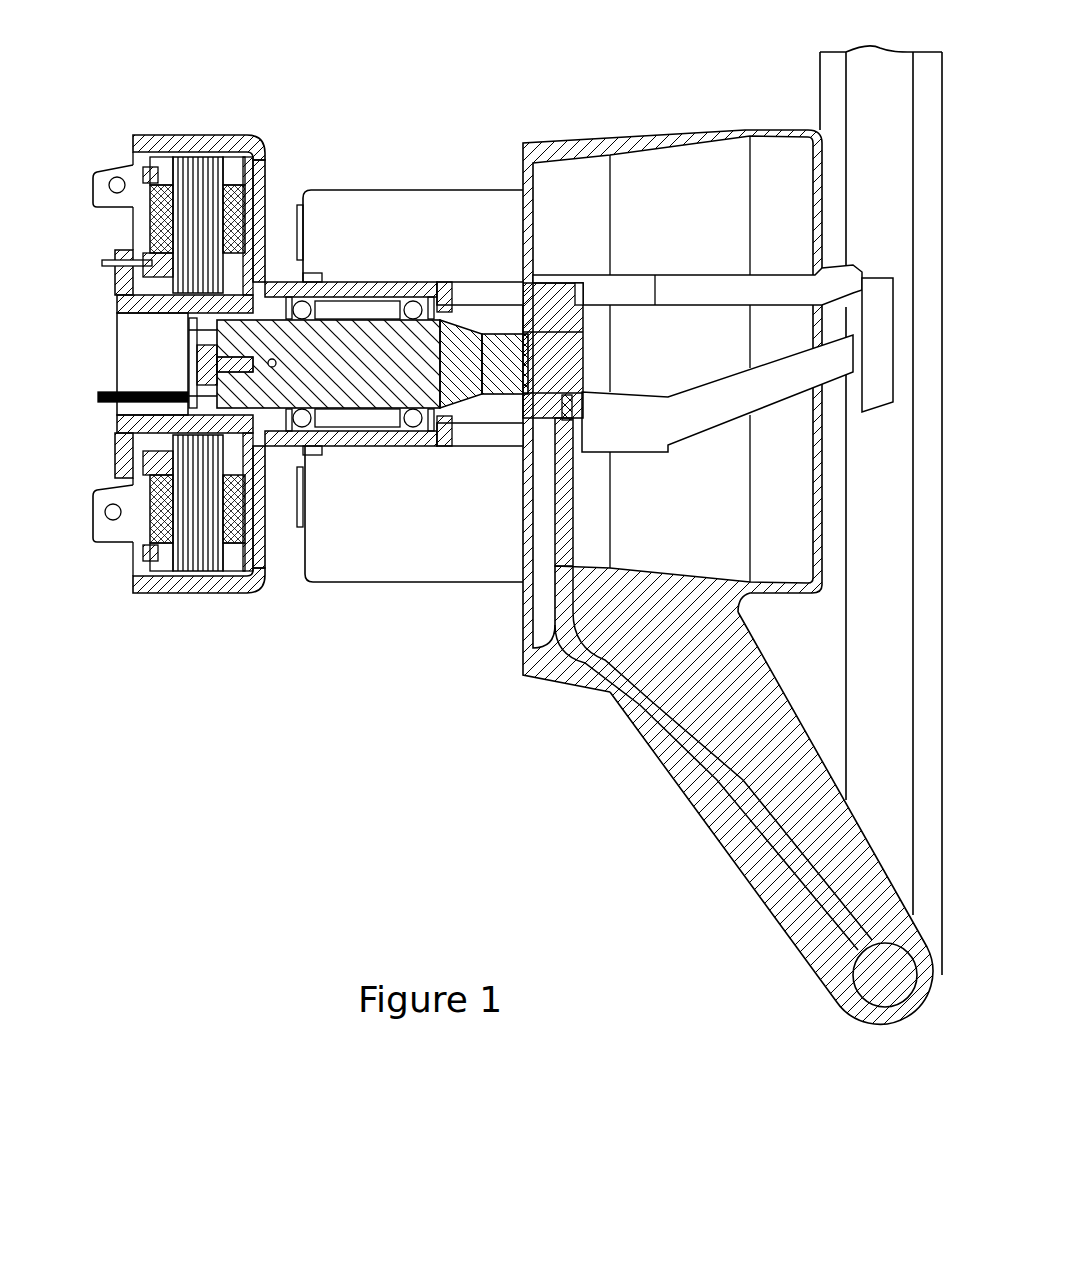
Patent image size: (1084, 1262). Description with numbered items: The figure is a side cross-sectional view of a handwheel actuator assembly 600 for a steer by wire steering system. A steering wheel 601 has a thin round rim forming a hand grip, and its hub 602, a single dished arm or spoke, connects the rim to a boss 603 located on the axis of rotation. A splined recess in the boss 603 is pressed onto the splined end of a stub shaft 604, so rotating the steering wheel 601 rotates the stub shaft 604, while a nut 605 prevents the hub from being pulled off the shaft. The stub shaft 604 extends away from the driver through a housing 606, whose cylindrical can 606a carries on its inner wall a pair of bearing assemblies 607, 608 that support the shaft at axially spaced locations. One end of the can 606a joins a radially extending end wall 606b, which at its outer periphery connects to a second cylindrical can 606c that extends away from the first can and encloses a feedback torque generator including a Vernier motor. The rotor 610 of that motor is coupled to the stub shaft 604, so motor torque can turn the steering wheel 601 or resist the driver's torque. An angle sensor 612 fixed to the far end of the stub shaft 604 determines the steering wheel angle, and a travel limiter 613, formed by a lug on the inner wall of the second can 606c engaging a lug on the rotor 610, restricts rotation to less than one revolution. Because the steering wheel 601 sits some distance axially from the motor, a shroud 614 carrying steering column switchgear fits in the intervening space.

The handwheel actuator assembly 600 is at (487, 563).
The steering wheel 601 is at (860, 1020).
The hub 602 is at (555, 685).
The boss 603 is at (527, 332).
The stub shaft 604 is at (458, 350).
The nut 605 is at (572, 310).
The housing 606 is at (302, 198).
The cylindrical can 606a is at (355, 282).
The end wall 606b is at (258, 192).
The second cylindrical can 606c is at (183, 133).
The bearing assembly 607 is at (303, 453).
The bearing assembly 608 is at (413, 425).
The rotor 610 is at (215, 142).
The angle sensor 612 is at (200, 355).
The travel limiter 613 is at (140, 132).
The shroud 614 is at (633, 273).